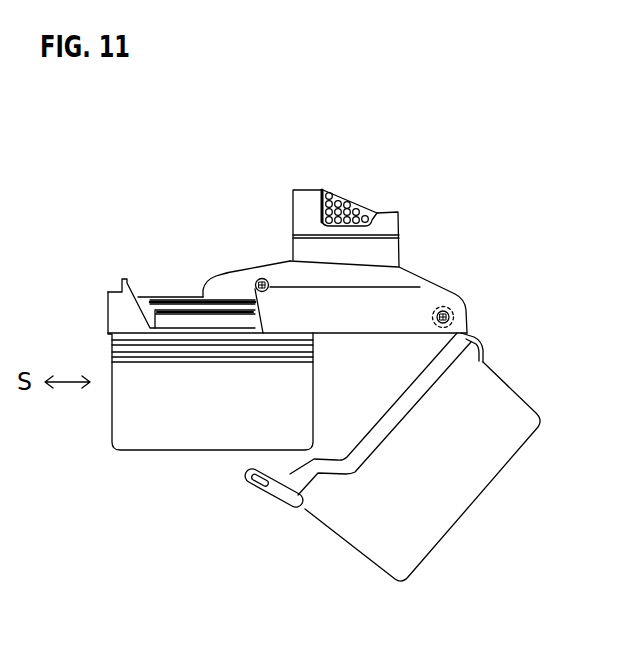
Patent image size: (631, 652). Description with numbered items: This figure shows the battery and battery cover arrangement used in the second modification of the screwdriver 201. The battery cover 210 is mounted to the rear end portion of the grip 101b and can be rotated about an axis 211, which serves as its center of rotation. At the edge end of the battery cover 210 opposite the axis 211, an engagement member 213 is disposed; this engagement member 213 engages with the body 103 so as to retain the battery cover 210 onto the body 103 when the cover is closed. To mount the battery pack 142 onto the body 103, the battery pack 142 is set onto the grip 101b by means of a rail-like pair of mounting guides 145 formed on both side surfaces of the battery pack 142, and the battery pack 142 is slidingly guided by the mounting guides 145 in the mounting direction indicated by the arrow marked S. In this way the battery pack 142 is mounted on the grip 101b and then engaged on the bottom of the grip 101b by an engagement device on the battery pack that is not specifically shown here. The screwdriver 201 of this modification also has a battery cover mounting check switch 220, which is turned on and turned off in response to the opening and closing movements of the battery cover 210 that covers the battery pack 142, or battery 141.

The screwdriver 201 is at (264, 199).
The grip 101b is at (423, 214).
The body 103 is at (426, 229).
The axis 211 is at (483, 307).
The mounting guides 145 is at (166, 305).
The battery 141 is at (194, 389).
The battery pack 142 is at (127, 437).
The battery cover mounting check switch 220 is at (519, 349).
The battery cover 210 is at (400, 562).
The engagement member 213 is at (249, 505).